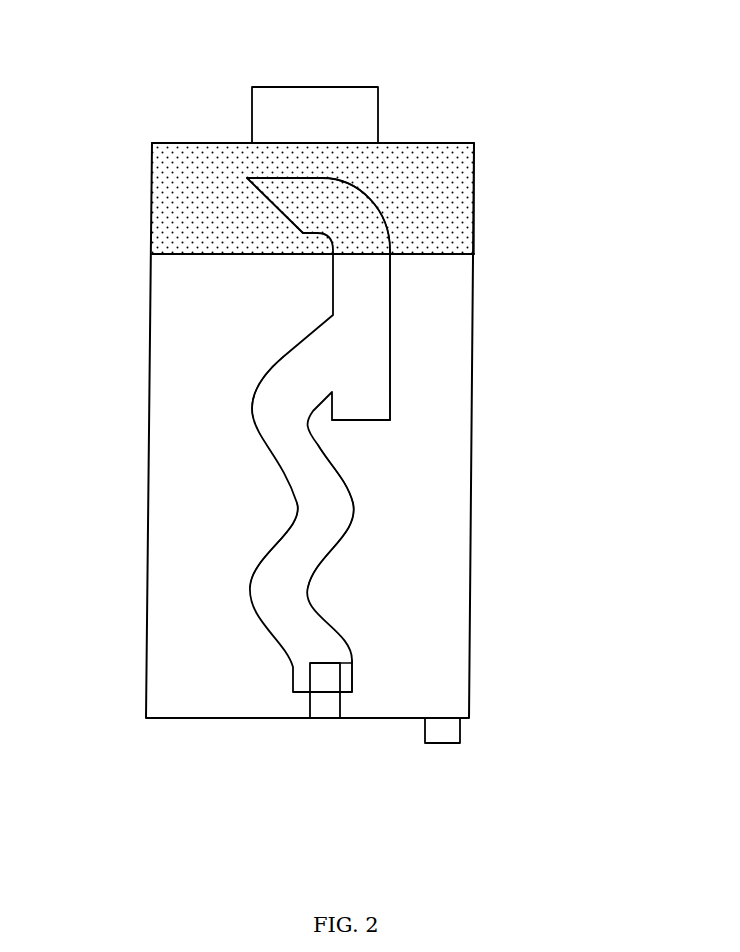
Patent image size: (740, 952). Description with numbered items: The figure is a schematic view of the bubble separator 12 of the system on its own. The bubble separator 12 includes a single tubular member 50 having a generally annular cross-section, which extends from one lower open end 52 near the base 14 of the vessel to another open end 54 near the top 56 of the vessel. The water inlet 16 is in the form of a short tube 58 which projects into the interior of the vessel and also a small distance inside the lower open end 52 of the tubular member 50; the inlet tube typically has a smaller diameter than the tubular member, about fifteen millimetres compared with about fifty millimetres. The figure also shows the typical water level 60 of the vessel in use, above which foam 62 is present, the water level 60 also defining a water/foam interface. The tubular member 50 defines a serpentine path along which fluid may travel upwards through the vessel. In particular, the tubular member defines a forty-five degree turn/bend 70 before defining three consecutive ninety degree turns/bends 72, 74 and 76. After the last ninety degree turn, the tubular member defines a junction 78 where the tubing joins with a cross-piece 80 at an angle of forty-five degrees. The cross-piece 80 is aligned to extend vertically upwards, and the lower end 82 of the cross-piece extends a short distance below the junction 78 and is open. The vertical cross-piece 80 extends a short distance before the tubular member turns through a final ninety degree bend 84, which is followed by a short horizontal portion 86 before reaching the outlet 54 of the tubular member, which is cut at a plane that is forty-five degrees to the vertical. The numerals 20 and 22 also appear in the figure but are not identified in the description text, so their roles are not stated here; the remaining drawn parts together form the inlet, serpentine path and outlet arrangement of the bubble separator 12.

The bubble separator 12 is at (357, 414).
The base 14 is at (475, 430).
The water inlet 16 is at (310, 718).
The outlet 20 is at (458, 731).
The connector 22 is at (378, 107).
The tubular member 50 is at (253, 443).
The lower open end 52 is at (345, 693).
The open end 54 is at (278, 193).
The top 56 is at (172, 143).
The short tube 58 is at (353, 663).
The water level 60 is at (453, 253).
The foam 62 is at (448, 160).
The turn/bend 70 is at (335, 622).
The turn/bend 72 is at (250, 588).
The turn/bend 74 is at (355, 500).
The turn/bend 76 is at (253, 410).
The junction 78 is at (345, 362).
The cross-piece 80 is at (390, 312).
The lower end 82 is at (378, 422).
The bend 84 is at (380, 203).
The horizontal portion 86 is at (288, 178).